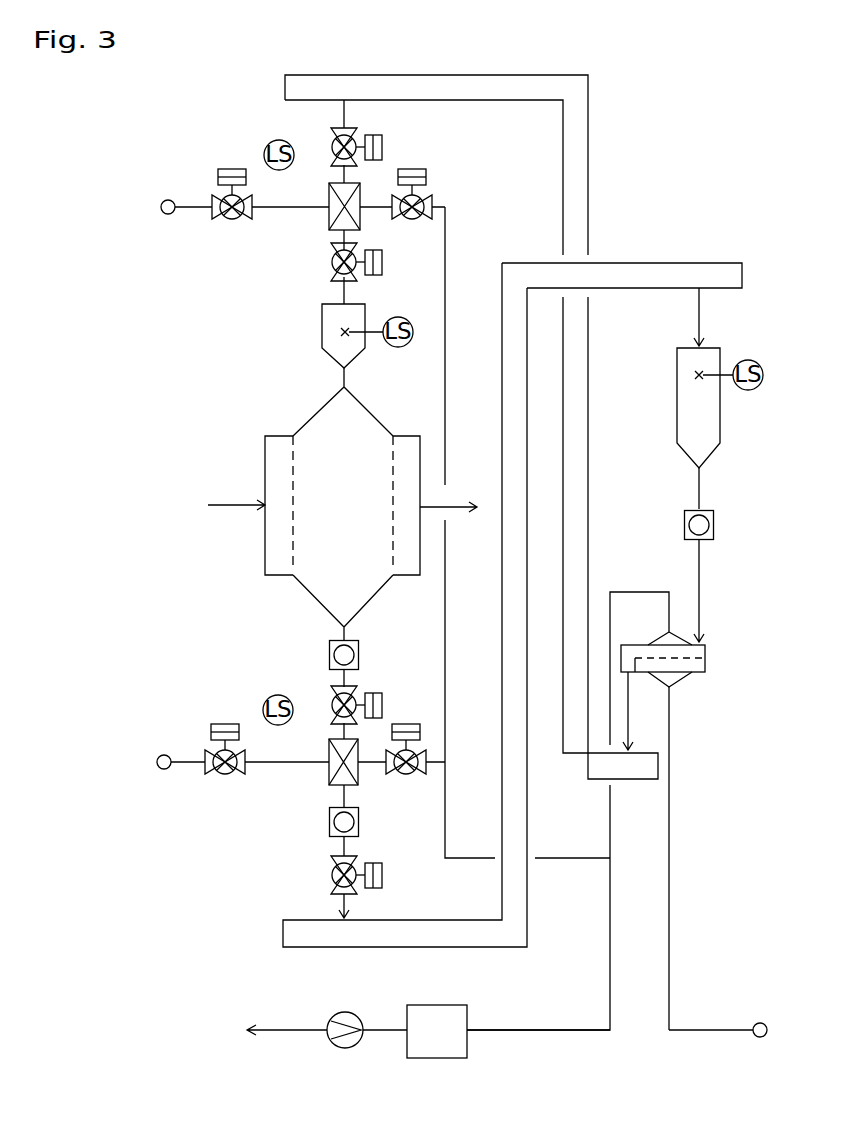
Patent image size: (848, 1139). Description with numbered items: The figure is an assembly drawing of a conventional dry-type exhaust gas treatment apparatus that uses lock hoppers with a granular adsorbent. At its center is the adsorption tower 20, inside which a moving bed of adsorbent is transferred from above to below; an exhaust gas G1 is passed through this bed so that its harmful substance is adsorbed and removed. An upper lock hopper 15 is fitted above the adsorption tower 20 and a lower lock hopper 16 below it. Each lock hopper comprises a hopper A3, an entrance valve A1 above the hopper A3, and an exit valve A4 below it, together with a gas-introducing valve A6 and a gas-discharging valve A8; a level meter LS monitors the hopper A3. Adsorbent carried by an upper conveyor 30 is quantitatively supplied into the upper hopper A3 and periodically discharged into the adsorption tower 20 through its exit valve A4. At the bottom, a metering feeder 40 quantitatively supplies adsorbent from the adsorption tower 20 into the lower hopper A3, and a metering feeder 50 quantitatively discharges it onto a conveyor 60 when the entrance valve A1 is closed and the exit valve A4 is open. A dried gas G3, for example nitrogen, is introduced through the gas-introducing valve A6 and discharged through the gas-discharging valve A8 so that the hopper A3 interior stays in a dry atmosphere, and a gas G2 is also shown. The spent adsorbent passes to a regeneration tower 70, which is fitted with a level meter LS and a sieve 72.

The upper lock hopper 15 is at (221, 121).
The lower lock hopper 16 is at (209, 670).
The adsorption tower 20 is at (265, 470).
The upper conveyor 30 is at (510, 73).
The metering feeder 40 is at (327, 646).
The metering feeder 50 is at (327, 834).
The conveyor 60 is at (403, 918).
The regeneration tower 70 is at (682, 402).
The sieve 72 is at (683, 667).
The entrance valve A1 is at (354, 131).
The hopper A3 is at (328, 217).
The exit valve A4 is at (332, 278).
The gas-introducing valve A6 is at (218, 178).
The gas-discharging valve A8 is at (432, 198).
The exhaust gas G1 is at (218, 507).
The gas G2 is at (166, 216).
The gas G3 is at (705, 1027).
The level meter LS is at (330, 750).